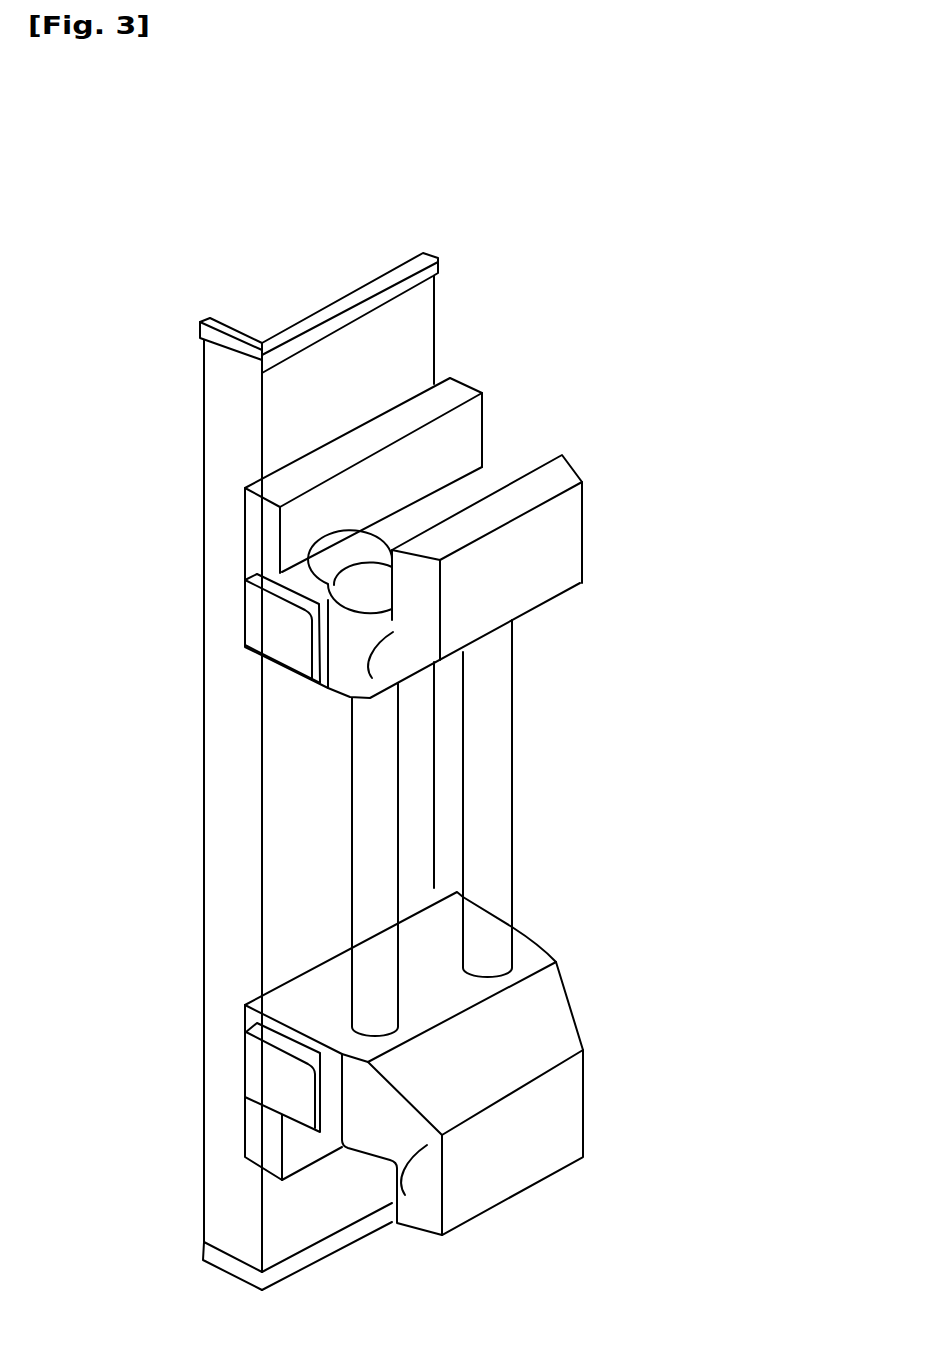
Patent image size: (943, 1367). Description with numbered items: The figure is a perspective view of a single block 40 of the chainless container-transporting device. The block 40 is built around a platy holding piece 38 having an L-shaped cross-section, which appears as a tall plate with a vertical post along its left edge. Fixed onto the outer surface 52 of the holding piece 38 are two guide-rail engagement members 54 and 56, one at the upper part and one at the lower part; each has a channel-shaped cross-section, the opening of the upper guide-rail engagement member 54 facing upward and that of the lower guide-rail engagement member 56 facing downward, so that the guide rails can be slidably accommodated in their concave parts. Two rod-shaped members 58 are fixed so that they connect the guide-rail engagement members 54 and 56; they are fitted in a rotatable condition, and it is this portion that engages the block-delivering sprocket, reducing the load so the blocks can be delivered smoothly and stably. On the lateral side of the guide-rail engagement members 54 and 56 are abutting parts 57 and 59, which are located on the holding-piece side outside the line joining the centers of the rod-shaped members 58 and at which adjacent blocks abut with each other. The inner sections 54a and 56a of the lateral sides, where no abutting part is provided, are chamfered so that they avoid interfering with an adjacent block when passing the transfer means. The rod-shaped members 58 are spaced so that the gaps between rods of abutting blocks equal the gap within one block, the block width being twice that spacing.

The holding piece 38 is at (322, 308).
The block 40 is at (520, 210).
The outer surface 52 is at (393, 353).
The guide-rail engagement member 54 is at (583, 533).
The inner section 54a is at (372, 678).
The guide-rail engagement member 56 is at (585, 1105).
The inner section 56a is at (405, 1195).
The abutting part 57 is at (272, 625).
The rod-shaped member 58 is at (517, 803).
The abutting part 59 is at (272, 1082).